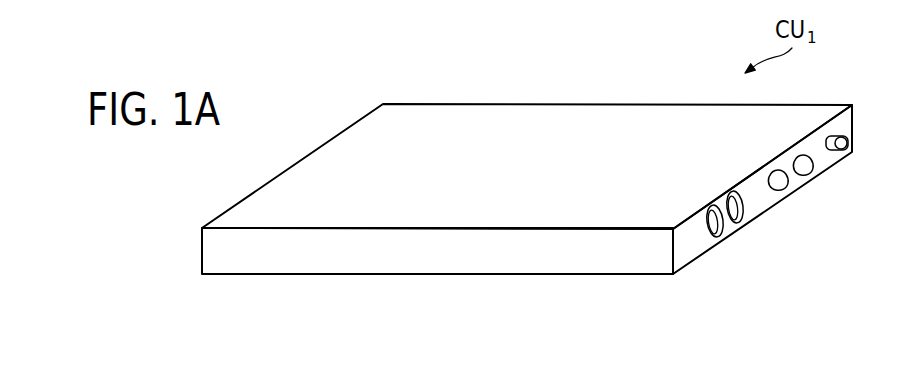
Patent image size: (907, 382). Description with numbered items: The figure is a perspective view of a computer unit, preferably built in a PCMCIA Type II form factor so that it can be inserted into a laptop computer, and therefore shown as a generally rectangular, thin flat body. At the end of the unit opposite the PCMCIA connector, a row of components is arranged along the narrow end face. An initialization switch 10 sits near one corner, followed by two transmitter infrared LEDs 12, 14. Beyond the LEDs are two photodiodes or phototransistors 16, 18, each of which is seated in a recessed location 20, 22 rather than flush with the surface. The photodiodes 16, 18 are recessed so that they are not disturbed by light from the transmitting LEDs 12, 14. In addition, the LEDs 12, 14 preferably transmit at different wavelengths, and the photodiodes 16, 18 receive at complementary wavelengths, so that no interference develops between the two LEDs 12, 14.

The initialization switch 10 is at (841, 153).
The infrared LED 12 is at (807, 177).
The infrared LED 14 is at (788, 190).
The photodiode 16 is at (738, 215).
The photodiode 18 is at (722, 237).
The recessed location 20 is at (740, 188).
The recessed location 22 is at (717, 205).